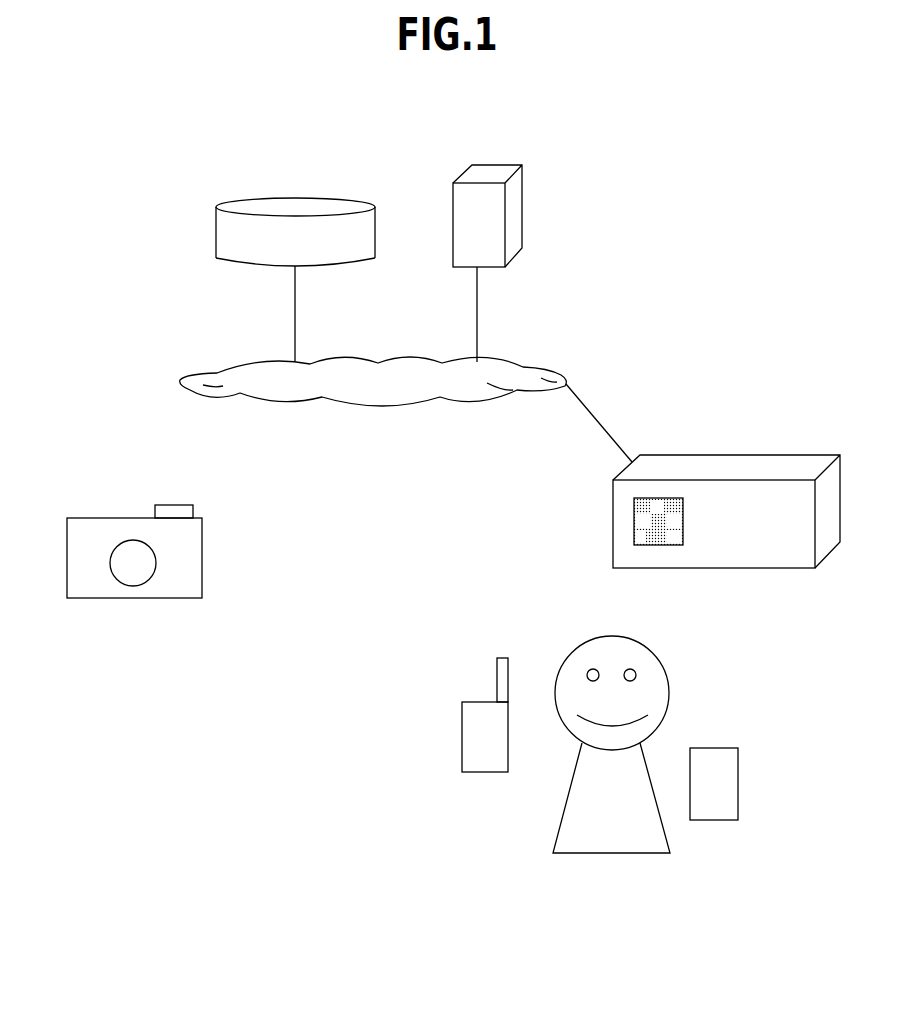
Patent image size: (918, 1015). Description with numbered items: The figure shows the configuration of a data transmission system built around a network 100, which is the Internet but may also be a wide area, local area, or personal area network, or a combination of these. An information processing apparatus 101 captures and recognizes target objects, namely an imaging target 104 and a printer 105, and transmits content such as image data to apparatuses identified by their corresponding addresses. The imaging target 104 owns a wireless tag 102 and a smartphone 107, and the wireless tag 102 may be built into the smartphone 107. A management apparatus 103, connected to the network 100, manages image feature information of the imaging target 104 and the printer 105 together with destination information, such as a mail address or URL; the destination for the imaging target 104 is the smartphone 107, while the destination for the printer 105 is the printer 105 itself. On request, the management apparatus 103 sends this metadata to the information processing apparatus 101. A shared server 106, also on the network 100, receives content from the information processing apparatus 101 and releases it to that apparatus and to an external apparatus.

The network 100 is at (380, 408).
The information processing apparatus 101 is at (116, 517).
The wireless tag 102 is at (478, 700).
The management apparatus 103 is at (300, 198).
The imaging target 104 is at (613, 636).
The printer 105 is at (730, 452).
The shared server 106 is at (494, 160).
The smartphone 107 is at (716, 747).